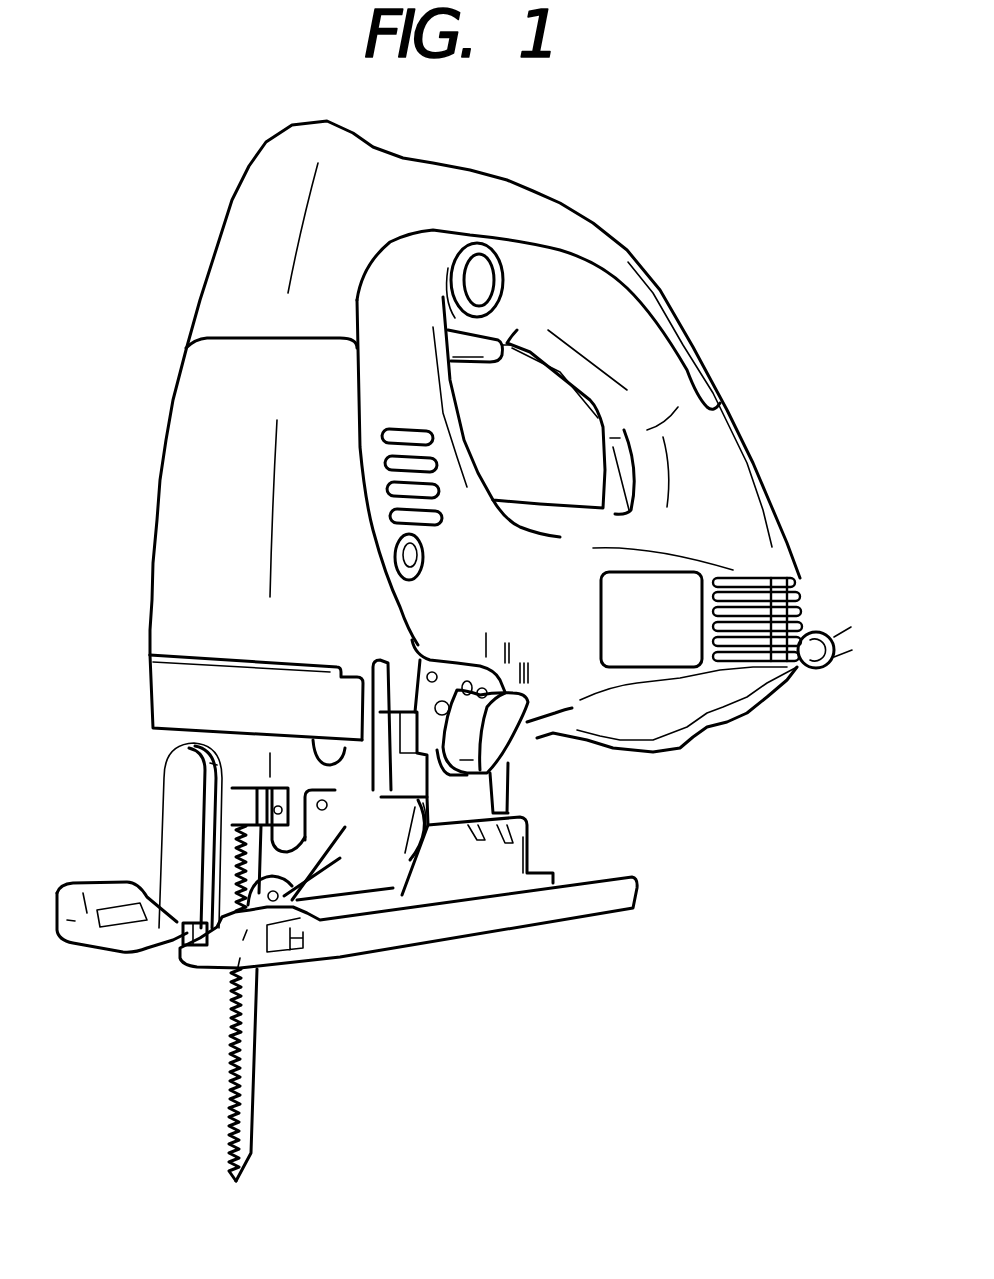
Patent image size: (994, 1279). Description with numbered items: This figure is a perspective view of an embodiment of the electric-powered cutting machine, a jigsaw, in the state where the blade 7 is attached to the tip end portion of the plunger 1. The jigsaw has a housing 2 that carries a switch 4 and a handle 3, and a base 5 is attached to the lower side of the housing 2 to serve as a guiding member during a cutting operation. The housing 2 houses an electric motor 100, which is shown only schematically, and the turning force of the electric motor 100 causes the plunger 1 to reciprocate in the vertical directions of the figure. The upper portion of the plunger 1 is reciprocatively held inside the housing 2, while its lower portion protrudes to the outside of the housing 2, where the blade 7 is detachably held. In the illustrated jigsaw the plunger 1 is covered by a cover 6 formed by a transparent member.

The electric motor 100 is at (200, 610).
The plunger 1 is at (242, 803).
The housing 2 is at (217, 310).
The handle 3 is at (610, 307).
The switch 4 is at (470, 343).
The base 5 is at (537, 913).
The cover 6 is at (367, 857).
The blade 7 is at (232, 1048).